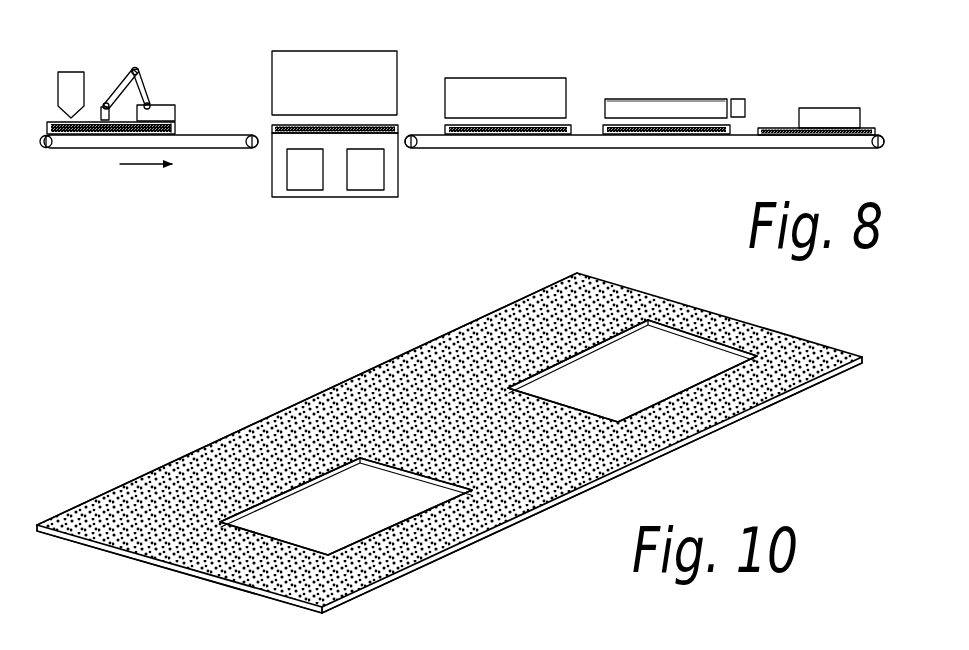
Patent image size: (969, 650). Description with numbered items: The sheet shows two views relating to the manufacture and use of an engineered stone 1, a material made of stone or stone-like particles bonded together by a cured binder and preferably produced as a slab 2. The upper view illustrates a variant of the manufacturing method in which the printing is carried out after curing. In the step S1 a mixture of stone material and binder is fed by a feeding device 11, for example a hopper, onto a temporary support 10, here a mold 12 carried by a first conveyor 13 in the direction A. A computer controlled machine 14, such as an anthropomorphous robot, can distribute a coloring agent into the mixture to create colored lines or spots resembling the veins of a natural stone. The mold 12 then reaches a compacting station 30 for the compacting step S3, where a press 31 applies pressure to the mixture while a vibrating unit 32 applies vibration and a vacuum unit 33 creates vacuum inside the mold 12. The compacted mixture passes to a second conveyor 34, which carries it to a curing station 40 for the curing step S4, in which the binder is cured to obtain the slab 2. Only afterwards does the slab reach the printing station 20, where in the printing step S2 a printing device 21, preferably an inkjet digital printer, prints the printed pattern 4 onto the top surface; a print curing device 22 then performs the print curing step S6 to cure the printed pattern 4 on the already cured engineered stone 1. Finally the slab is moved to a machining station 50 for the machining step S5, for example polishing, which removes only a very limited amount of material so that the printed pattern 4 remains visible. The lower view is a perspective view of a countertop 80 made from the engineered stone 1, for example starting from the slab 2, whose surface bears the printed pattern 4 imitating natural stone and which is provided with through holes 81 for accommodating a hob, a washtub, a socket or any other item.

In FIG. 10, the engineered stone 1 is at (126, 460).
In FIG. 10, the slab 2 is at (795, 388).
In FIG. 10, the printed pattern 4 is at (68, 548).
In FIG. 8, the temporary support 10 is at (51, 123).
In FIG. 8, the feeding device 11 is at (68, 70).
In FIG. 8, the mold 12 is at (176, 127).
In FIG. 8, the first conveyor 13 is at (70, 148).
In FIG. 8, the computer controlled machine 14 is at (167, 106).
In FIG. 8, the printing station 20 is at (642, 108).
In FIG. 8, the printing device 21 is at (675, 105).
In FIG. 8, the print curing device 22 is at (741, 118).
In FIG. 8, the compacting station 30 is at (399, 185).
In FIG. 8, the press 31 is at (307, 53).
In FIG. 8, the vibrating unit 32 is at (302, 181).
In FIG. 8, the vacuum unit 33 is at (372, 181).
In FIG. 8, the second conveyor 34 is at (682, 141).
In FIG. 8, the curing station 40 is at (501, 101).
In FIG. 8, the machining station 50 is at (843, 118).
In FIG. 10, the countertop 80 is at (831, 352).
In FIG. 10, the through holes 81 is at (652, 338).
In FIG. 8, the direction A is at (137, 168).
In FIG. 8, the step of providing a mixture S1 is at (114, 56).
In FIG. 8, the printing step S2 is at (662, 68).
In FIG. 8, the compacting step S3 is at (257, 171).
In FIG. 8, the curing step S4 is at (537, 68).
In FIG. 8, the machining step S5 is at (811, 97).
In FIG. 8, the print curing step S6 is at (742, 92).